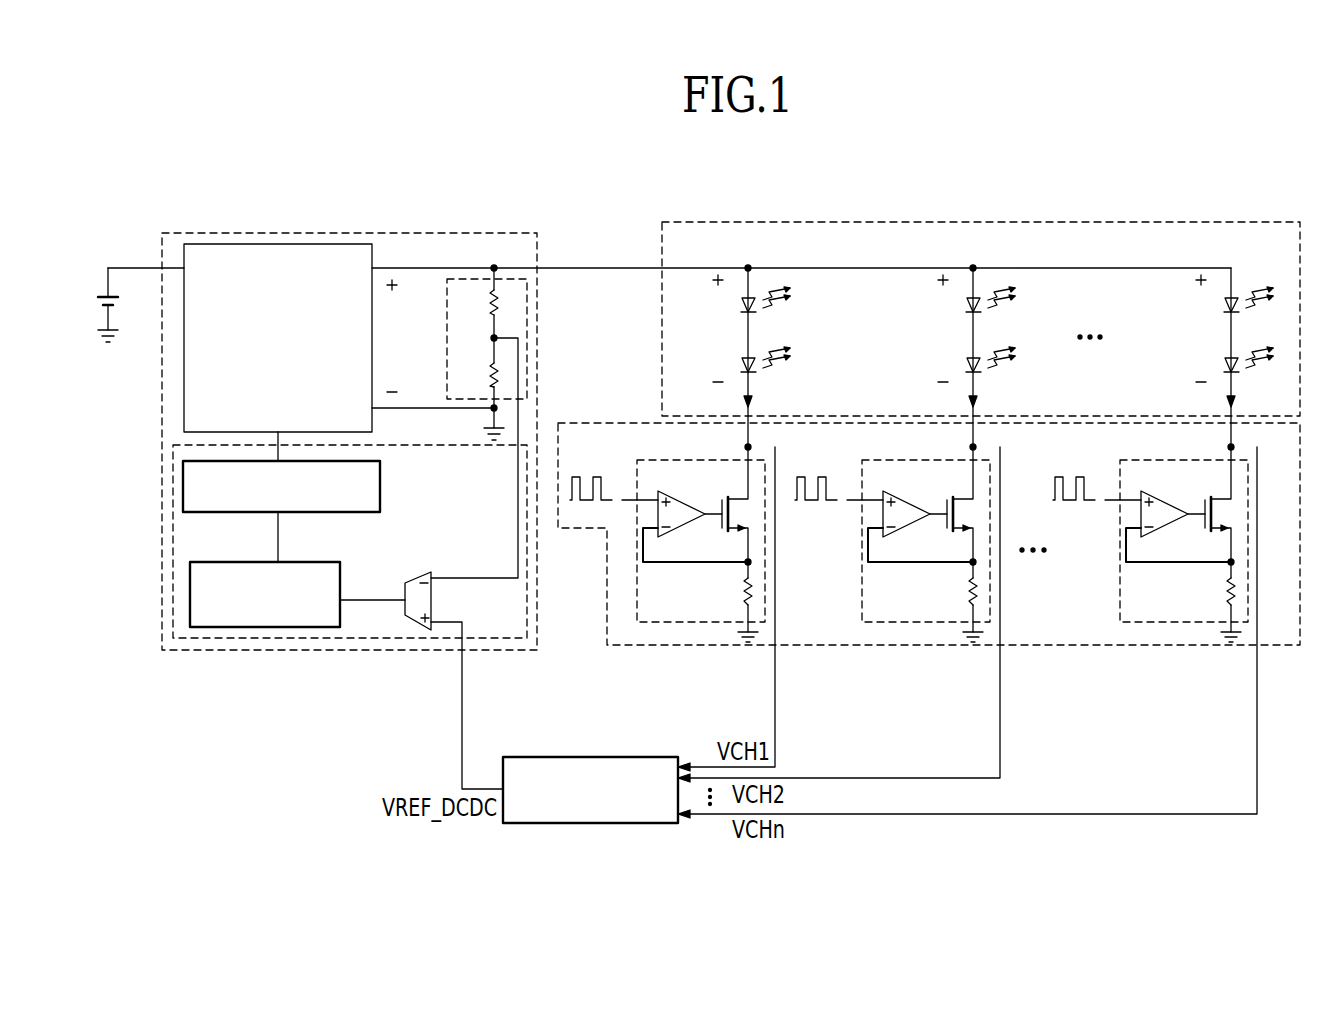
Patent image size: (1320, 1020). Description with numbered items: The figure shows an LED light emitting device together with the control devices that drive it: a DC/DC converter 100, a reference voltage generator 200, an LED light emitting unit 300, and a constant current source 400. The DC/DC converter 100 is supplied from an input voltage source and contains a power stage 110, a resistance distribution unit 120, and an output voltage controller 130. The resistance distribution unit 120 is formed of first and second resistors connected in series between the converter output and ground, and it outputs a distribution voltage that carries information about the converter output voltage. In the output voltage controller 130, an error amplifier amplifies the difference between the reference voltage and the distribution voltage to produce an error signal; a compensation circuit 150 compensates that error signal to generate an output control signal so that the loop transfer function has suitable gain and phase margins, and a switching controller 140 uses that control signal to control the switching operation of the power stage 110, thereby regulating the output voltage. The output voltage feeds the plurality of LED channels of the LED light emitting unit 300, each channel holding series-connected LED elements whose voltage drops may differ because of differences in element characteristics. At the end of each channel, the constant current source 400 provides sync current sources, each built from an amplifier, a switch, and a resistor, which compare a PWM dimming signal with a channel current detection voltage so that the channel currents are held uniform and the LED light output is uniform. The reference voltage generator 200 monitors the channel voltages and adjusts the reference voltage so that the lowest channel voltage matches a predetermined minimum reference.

The DC/DC converter 100 is at (347, 232).
The power stage 110 is at (262, 242).
The resistance distribution unit 120 is at (470, 277).
The output voltage controller 130 is at (202, 643).
The switching controller 140 is at (382, 486).
The compensation circuit 150 is at (278, 628).
The reference voltage generator 200 is at (590, 755).
The LED light emitting unit 300 is at (1080, 220).
The constant current source 400 is at (1078, 647).